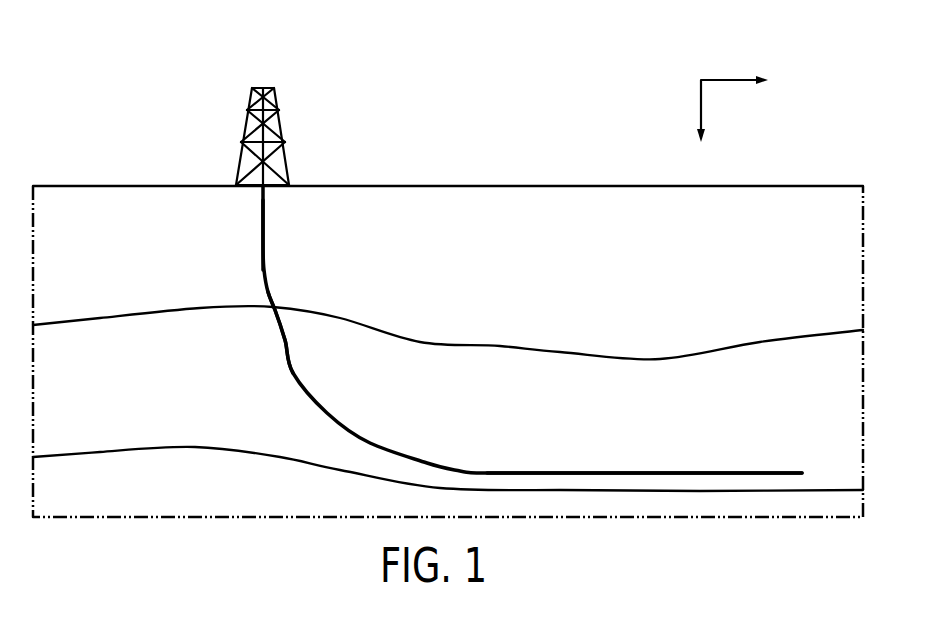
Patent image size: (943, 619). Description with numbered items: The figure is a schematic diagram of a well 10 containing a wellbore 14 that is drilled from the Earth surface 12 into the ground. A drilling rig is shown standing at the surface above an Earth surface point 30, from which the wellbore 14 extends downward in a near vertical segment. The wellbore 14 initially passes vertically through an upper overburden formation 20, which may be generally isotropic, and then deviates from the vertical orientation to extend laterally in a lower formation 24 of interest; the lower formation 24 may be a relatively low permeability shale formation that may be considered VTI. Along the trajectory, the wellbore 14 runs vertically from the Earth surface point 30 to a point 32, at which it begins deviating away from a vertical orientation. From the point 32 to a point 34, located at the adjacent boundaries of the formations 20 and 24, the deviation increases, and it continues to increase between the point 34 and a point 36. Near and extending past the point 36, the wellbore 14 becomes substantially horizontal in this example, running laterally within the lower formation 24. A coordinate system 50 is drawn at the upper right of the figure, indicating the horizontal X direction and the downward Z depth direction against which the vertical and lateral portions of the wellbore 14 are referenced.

The well 10 is at (428, 122).
The surface 12 is at (488, 185).
The wellbore 14 is at (268, 213).
The upper overburden formation 20 is at (698, 268).
The lower formation 24 is at (698, 432).
The Earth surface point 30 is at (250, 194).
The point 32 is at (254, 242).
The point 34 is at (265, 320).
The point 36 is at (502, 460).
The coordinate system 50 is at (719, 70).